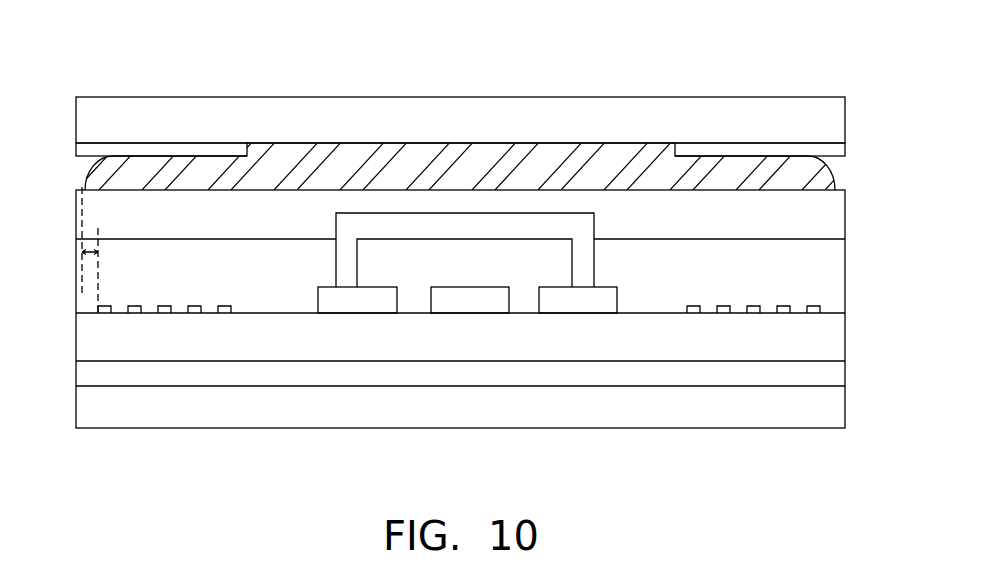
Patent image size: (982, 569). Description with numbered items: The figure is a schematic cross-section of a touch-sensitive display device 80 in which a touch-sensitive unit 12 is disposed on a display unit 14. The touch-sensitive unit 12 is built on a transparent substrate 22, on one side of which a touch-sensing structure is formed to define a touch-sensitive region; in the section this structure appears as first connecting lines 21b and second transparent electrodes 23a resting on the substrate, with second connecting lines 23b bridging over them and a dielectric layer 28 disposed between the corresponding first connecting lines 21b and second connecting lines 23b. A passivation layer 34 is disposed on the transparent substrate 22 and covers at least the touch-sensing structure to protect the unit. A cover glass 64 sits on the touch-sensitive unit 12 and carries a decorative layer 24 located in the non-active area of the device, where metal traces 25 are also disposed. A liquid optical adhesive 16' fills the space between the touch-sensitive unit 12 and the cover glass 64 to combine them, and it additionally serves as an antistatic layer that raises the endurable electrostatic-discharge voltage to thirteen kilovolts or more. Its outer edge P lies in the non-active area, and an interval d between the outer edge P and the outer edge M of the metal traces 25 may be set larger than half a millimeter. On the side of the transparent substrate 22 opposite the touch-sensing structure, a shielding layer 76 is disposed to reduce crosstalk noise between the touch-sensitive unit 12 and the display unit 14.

The touch-sensitive display device 80 is at (165, 41).
The cover glass 64 is at (467, 130).
The decorative layer 24 is at (80, 152).
The liquid optical adhesive 16' is at (474, 164).
The outer edge of the liquid optical adhesive P is at (90, 178).
The touch-sensitive unit 12 is at (468, 307).
The passivation layer 34 is at (227, 228).
The dielectric layer 28 is at (210, 283).
The second connecting lines 23b is at (487, 236).
The second transparent electrodes 23a is at (380, 313).
The first connecting lines 21b is at (490, 313).
The metal traces 25 is at (105, 313).
The outer edge of the metal traces M is at (98, 308).
The interval d is at (90, 249).
The transparent substrate 22 is at (474, 346).
The shielding layer 76 is at (474, 385).
The display unit 14 is at (474, 414).